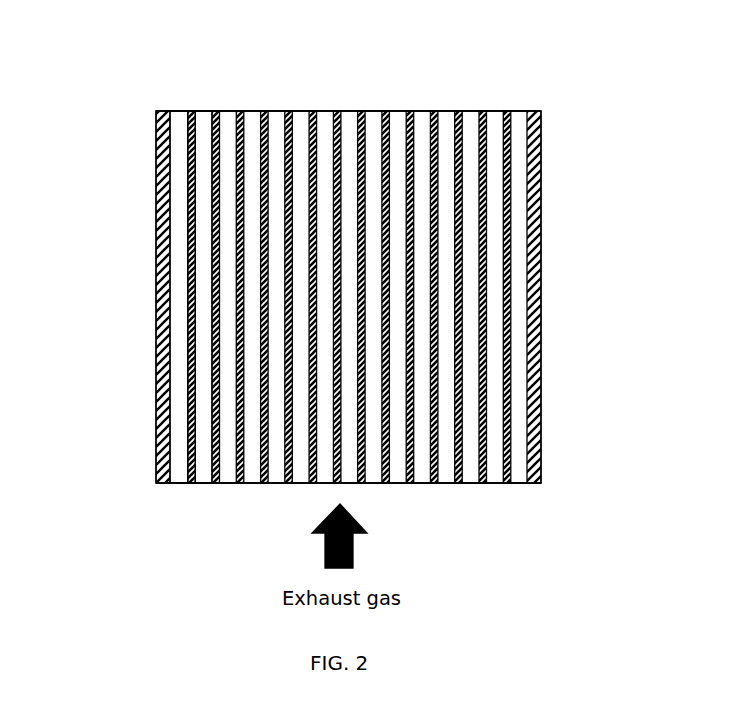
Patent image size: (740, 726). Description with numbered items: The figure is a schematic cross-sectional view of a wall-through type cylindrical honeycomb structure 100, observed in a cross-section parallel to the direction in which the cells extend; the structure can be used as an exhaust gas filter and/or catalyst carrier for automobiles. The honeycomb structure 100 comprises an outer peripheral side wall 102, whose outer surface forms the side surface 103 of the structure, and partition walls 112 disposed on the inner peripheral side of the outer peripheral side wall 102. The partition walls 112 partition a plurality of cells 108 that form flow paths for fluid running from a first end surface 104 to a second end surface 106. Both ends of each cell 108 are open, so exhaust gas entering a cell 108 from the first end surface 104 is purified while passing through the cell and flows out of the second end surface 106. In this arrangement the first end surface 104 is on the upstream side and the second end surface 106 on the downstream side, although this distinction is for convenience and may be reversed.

The cylindrical honeycomb structure 100 is at (351, 291).
The outer peripheral side wall 102 is at (540, 110).
The side surface 103 is at (157, 152).
The first end surface 104 is at (478, 495).
The second end surface 106 is at (238, 104).
The cell 108 is at (422, 120).
The partition wall 112 is at (190, 248).